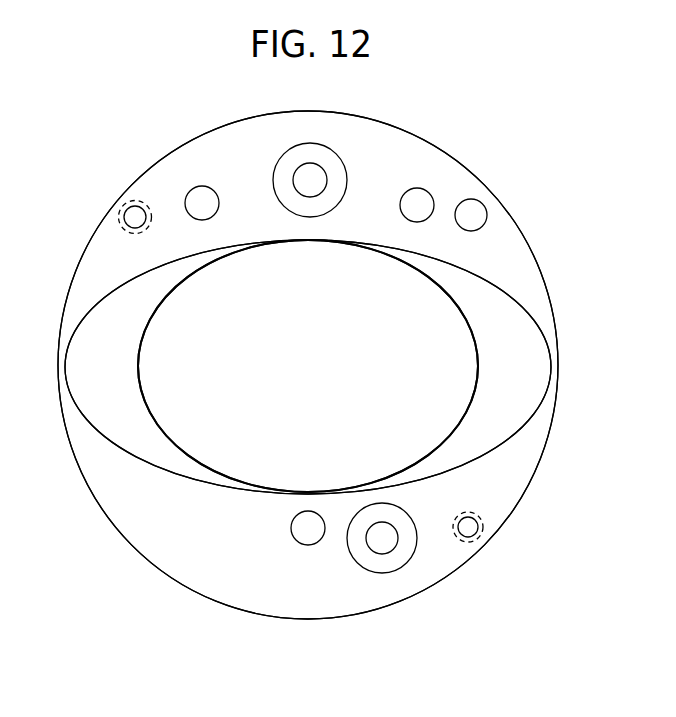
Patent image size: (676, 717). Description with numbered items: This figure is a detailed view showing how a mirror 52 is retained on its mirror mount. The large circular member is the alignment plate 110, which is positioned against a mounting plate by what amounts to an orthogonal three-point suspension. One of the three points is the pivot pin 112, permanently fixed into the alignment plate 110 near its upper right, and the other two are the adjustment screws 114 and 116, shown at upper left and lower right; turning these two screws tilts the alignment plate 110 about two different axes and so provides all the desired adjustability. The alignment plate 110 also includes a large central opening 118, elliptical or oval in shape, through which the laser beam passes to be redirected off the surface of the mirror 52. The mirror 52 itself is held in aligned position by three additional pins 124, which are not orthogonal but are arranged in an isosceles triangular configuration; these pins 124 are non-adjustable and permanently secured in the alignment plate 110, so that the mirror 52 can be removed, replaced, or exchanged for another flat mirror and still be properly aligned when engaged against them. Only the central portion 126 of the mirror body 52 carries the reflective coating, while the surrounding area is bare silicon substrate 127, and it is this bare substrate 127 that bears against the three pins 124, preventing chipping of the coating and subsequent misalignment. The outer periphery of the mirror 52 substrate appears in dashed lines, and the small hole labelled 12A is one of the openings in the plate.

The alignment plate 110 is at (93, 267).
The mirror 52 is at (421, 139).
The central opening 118 is at (74, 330).
The bare substrate 127 is at (93, 418).
The coated central portion 126 is at (307, 383).
The adjustment screw 114 is at (295, 169).
The alignment pins 124 is at (203, 199).
The pivot pin 112 is at (477, 213).
The hole 12A is at (308, 511).
The adjustment screw 116 is at (477, 525).